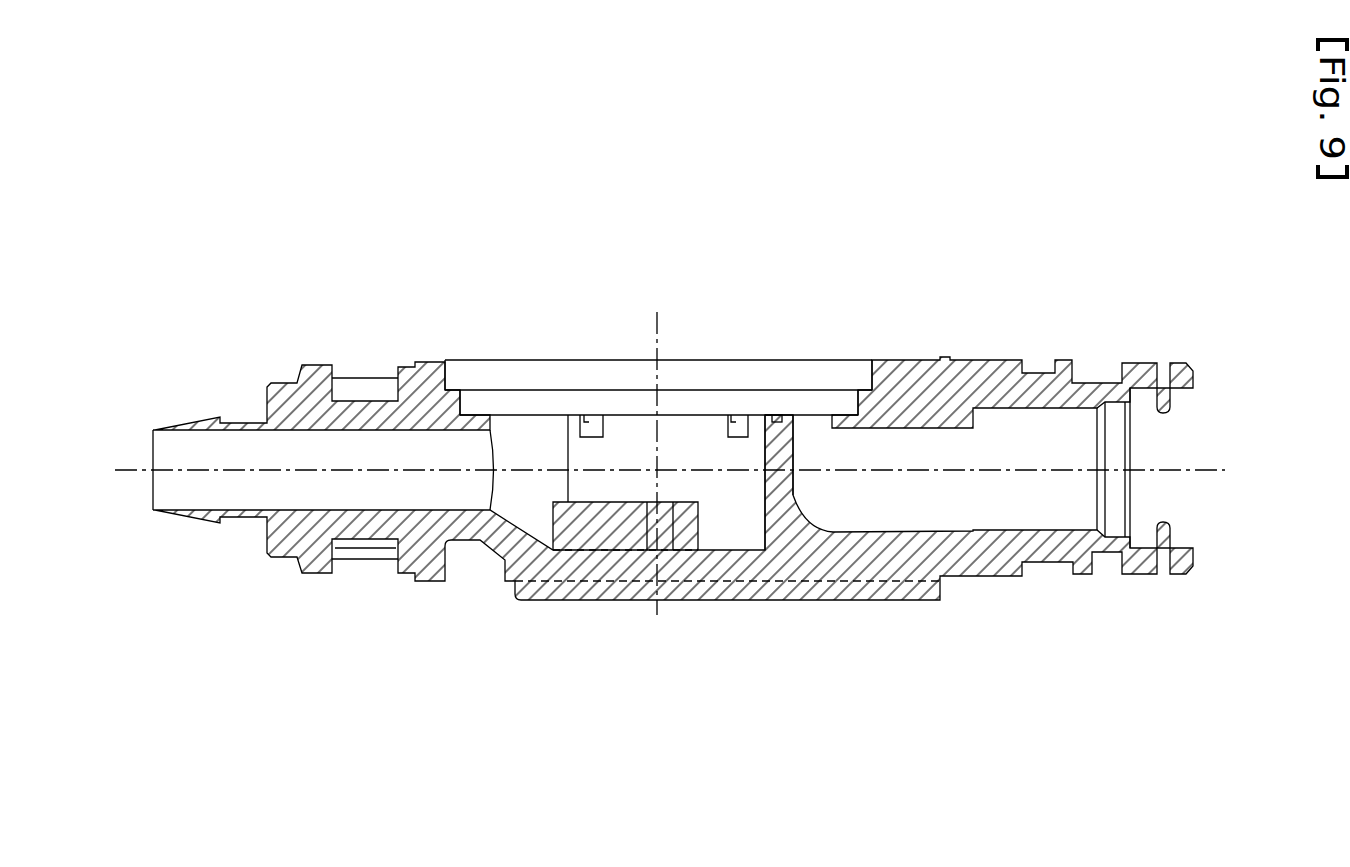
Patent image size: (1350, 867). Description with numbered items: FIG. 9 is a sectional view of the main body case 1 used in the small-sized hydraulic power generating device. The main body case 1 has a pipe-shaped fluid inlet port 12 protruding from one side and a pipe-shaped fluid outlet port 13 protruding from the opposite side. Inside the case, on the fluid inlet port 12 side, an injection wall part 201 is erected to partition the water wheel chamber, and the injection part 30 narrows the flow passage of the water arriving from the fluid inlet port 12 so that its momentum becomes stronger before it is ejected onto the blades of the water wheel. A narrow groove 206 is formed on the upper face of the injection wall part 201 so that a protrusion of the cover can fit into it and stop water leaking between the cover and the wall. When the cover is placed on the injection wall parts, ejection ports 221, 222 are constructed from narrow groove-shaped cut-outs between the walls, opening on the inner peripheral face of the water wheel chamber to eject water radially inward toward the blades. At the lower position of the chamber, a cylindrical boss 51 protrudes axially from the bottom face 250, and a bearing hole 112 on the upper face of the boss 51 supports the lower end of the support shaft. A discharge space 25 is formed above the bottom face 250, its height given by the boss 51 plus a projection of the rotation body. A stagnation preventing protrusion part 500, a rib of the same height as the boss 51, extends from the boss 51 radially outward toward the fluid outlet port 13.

The main body case 1 is at (1015, 305).
The fluid inlet port 12 is at (1140, 574).
The fluid outlet port 13 is at (189, 511).
The discharge space 25 is at (732, 503).
The injection part 30 is at (613, 527).
The boss 51 is at (683, 517).
The bearing hole 112 is at (616, 560).
The injection wall part 201 is at (792, 420).
The narrow groove 206 is at (773, 416).
The ejection port 221 is at (745, 414).
The ejection port 222 is at (577, 414).
The bottom face 250 is at (733, 550).
The stagnation preventing protrusion part 500 is at (628, 457).